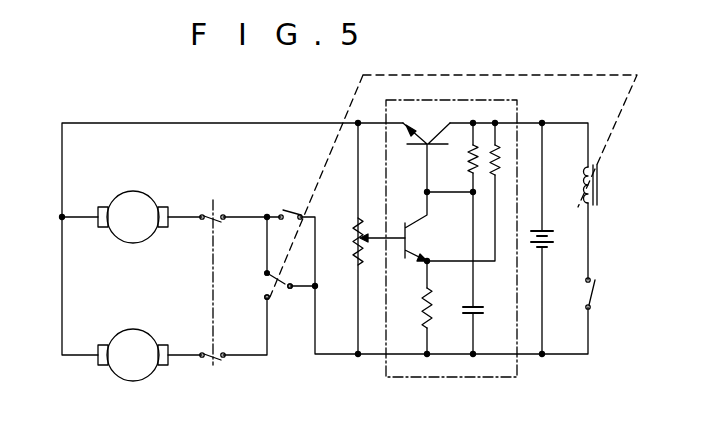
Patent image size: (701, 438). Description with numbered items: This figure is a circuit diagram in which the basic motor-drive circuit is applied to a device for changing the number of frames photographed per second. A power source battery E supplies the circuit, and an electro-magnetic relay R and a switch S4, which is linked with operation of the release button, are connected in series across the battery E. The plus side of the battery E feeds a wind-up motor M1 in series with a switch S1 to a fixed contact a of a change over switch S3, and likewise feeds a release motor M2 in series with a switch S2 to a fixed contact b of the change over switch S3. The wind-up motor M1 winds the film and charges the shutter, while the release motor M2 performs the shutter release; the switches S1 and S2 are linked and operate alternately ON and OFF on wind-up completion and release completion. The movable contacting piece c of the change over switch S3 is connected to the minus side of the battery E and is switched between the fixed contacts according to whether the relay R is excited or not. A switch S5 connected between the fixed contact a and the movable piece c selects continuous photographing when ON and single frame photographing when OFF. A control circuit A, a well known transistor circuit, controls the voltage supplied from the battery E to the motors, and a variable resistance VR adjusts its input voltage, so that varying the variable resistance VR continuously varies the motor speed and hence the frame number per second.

The wind-up motor M1 is at (133, 203).
The release motor M2 is at (133, 342).
The switch S1 is at (216, 273).
The switch S2 is at (221, 343).
The change over switch S3 is at (284, 299).
The switch S4 is at (608, 292).
The switch S5 is at (290, 199).
The fixed contact a is at (260, 271).
The fixed contact b is at (260, 294).
The movable contacting piece c is at (294, 275).
The variable resistance VR is at (364, 241).
The control circuit A is at (525, 92).
The power source battery E is at (550, 246).
The electro-magnetic relay R is at (603, 185).